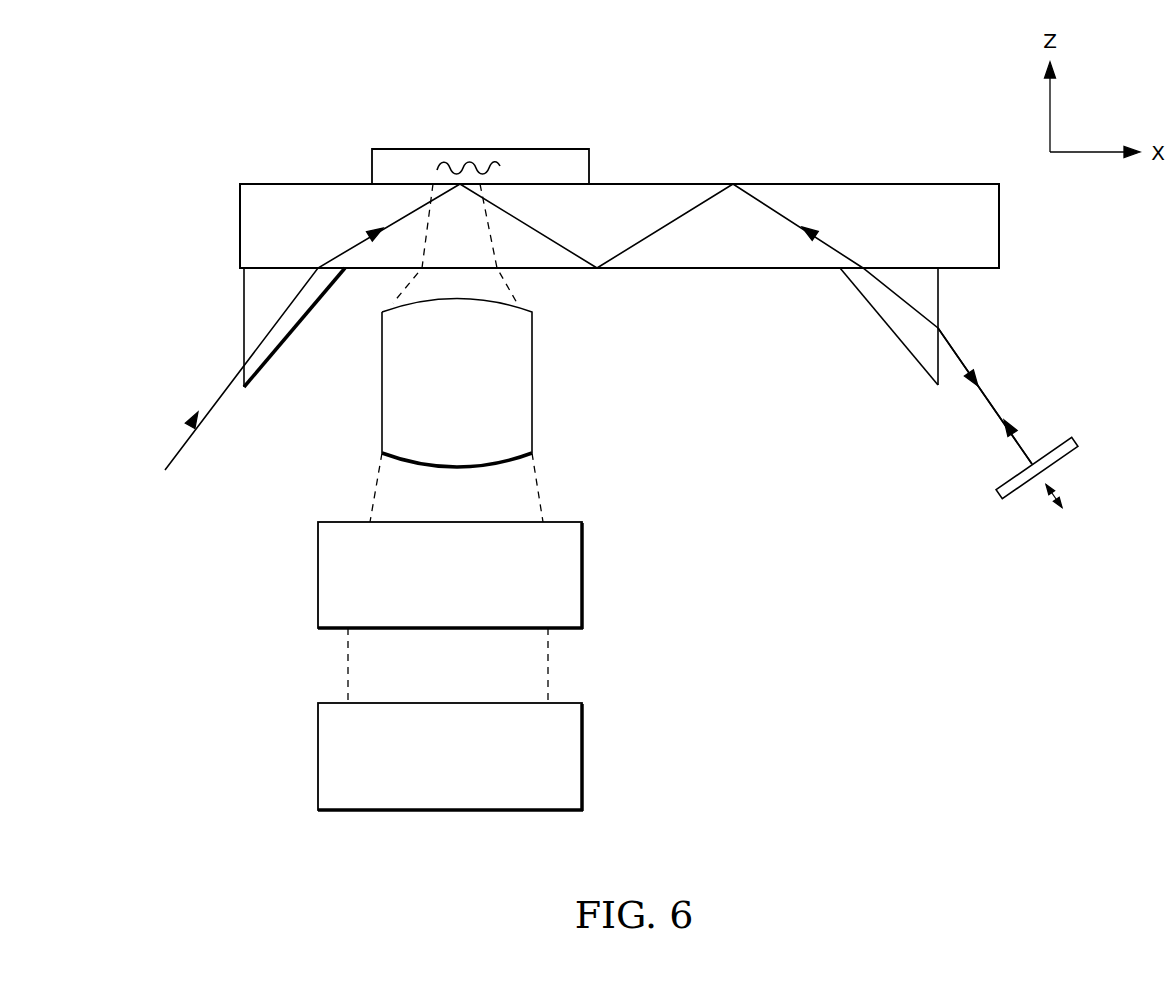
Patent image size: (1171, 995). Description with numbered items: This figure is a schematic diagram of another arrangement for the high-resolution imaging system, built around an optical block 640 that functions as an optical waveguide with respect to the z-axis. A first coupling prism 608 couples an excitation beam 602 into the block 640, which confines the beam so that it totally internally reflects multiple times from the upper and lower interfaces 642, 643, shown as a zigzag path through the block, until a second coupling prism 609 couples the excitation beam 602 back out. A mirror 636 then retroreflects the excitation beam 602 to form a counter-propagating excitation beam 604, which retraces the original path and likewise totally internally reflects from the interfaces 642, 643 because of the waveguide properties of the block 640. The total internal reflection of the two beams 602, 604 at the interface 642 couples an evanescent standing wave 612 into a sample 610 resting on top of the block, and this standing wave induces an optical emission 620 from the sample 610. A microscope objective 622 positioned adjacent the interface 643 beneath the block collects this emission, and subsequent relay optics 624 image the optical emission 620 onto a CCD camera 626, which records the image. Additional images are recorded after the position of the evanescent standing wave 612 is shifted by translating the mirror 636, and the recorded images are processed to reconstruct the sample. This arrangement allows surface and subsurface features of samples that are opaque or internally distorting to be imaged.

The excitation beam 602 is at (175, 460).
The counter-propagating excitation beam 604 is at (994, 404).
The first coupling prism 608 is at (244, 300).
The second coupling prism 609 is at (938, 304).
The sample 610 is at (372, 156).
The evanescent standing wave 612 is at (500, 166).
The optical emission 620 is at (485, 232).
The microscope objective 622 is at (532, 385).
The relay optics 624 is at (582, 573).
The CCD camera 626 is at (582, 753).
The mirror 636 is at (1076, 448).
The optical block 640 is at (746, 248).
The interface 642 is at (620, 184).
The interface 643 is at (642, 268).